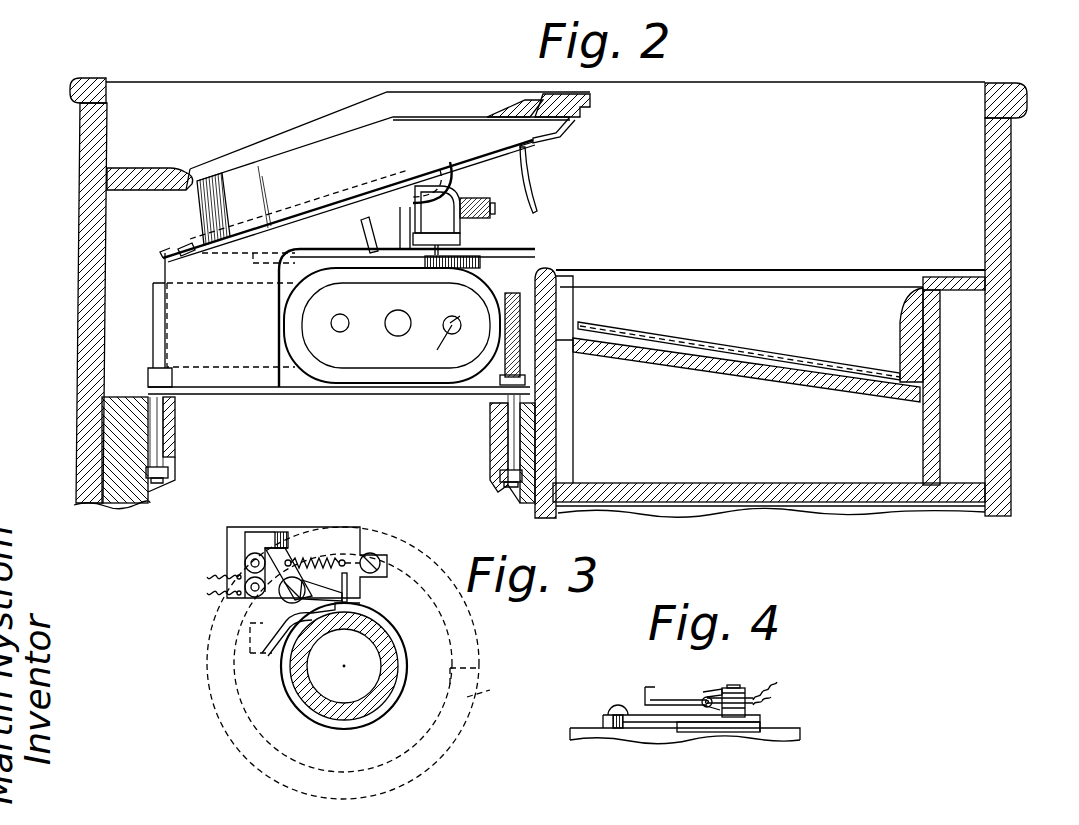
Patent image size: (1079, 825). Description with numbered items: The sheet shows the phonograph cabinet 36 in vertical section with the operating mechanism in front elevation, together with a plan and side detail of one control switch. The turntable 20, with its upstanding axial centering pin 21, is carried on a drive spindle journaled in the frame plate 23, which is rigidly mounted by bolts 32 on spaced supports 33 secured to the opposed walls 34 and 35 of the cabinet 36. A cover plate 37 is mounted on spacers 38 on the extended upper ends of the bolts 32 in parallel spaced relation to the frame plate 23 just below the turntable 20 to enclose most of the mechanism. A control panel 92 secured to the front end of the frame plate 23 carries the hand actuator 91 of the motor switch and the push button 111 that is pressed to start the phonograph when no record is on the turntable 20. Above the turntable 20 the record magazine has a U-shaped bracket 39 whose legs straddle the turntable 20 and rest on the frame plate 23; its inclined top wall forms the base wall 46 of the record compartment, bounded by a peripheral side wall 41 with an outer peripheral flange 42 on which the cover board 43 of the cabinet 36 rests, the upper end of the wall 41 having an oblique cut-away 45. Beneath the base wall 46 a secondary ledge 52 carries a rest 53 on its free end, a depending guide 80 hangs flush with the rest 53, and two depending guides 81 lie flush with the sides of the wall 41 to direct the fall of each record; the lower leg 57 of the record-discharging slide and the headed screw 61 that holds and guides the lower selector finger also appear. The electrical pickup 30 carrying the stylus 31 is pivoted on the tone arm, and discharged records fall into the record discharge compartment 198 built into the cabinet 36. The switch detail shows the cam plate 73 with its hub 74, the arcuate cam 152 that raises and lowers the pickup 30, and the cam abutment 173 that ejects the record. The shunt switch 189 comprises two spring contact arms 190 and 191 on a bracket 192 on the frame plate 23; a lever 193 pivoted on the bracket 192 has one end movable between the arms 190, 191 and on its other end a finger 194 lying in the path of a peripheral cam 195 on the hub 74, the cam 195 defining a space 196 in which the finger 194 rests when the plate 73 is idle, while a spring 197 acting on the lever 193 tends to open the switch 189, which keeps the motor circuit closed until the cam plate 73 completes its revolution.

In FIG. 2, the turntable 20 is at (481, 264).
In FIG. 2, the centering pin 21 is at (372, 249).
In FIG. 2, the frame plate 23 is at (312, 394).
In FIG. 4, the frame plate 23 is at (632, 735).
In FIG. 2, the pickup 30 is at (452, 221).
In FIG. 2, the stylus 31 is at (443, 240).
In FIG. 2, the bolts 32 is at (160, 441).
In FIG. 2, the supports 33 is at (176, 420).
In FIG. 2, the wall 34 is at (107, 358).
In FIG. 2, the wall 35 is at (535, 500).
In FIG. 2, the cabinet 36 is at (1012, 326).
In FIG. 2, the cover plate 37 is at (505, 288).
In FIG. 2, the spacers 38 is at (155, 317).
In FIG. 2, the bracket 39 is at (172, 270).
In FIG. 2, the peripheral side wall 41 is at (203, 210).
In FIG. 2, the outer peripheral flange 42 is at (188, 189).
In FIG. 2, the cover board 43 is at (136, 175).
In FIG. 2, the oblique cut-away 45 is at (463, 115).
In FIG. 2, the base wall 46 is at (481, 157).
In FIG. 2, the secondary ledge 52 is at (560, 136).
In FIG. 2, the rest 53 is at (534, 146).
In FIG. 2, the lower leg 57 is at (164, 256).
In FIG. 2, the headed screw 61 is at (192, 244).
In FIG. 3, the cam plate 73 is at (207, 684).
In FIG. 3, the hub 74 is at (392, 652).
In FIG. 2, the depending guide 80 is at (534, 186).
In FIG. 2, the depending guides 81 is at (372, 226).
In FIG. 2, the hand actuator 91 is at (462, 328).
In FIG. 2, the control panel 92 is at (388, 384).
In FIG. 2, the push button 111 is at (348, 321).
In FIG. 3, the arcuate cam 152 is at (478, 694).
In FIG. 3, the cam abutment 173 is at (250, 625).
In FIG. 3, the switch 189 is at (268, 538).
In FIG. 3, the spring contact arm 190 is at (245, 547).
In FIG. 4, the spring contact arm 190 is at (712, 693).
In FIG. 4, the spring contact arm 191 is at (717, 713).
In FIG. 3, the bracket 192 is at (305, 528).
In FIG. 4, the bracket 192 is at (740, 720).
In FIG. 3, the lever 193 is at (295, 558).
In FIG. 4, the lever 193 is at (658, 702).
In FIG. 3, the finger 194 is at (358, 598).
In FIG. 3, the peripheral cam 195 is at (392, 633).
In FIG. 3, the space 196 is at (268, 647).
In FIG. 3, the spring 197 is at (328, 558).
In FIG. 2, the record discharge compartment 198 is at (798, 296).